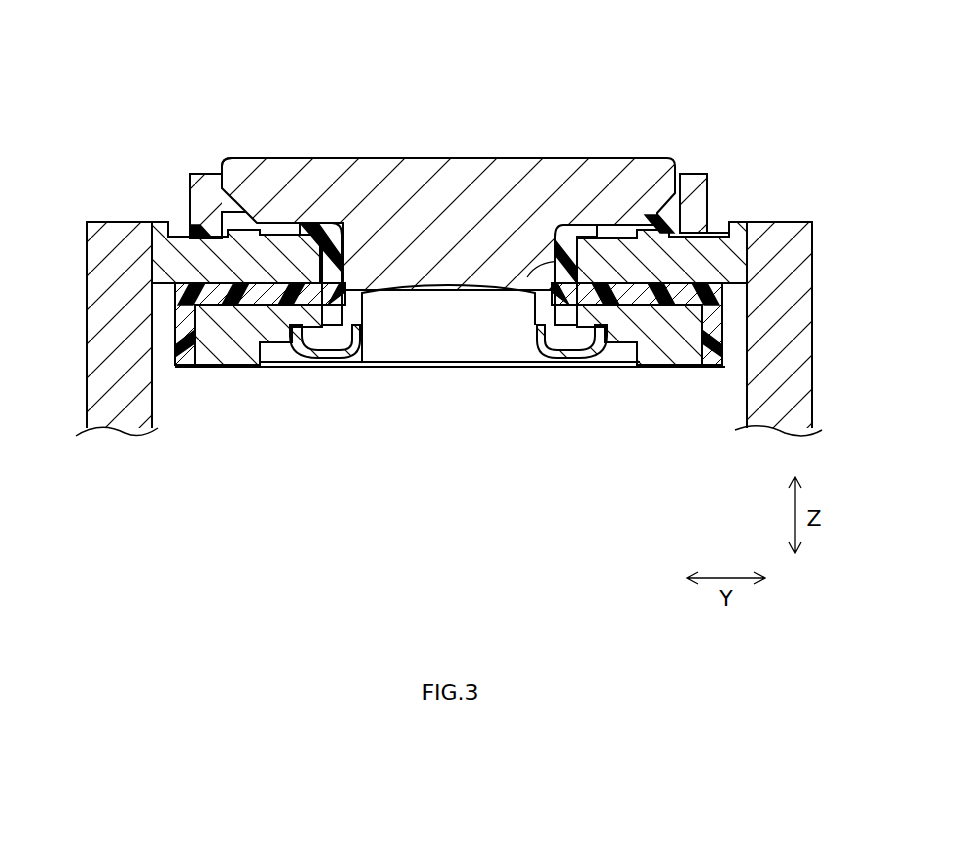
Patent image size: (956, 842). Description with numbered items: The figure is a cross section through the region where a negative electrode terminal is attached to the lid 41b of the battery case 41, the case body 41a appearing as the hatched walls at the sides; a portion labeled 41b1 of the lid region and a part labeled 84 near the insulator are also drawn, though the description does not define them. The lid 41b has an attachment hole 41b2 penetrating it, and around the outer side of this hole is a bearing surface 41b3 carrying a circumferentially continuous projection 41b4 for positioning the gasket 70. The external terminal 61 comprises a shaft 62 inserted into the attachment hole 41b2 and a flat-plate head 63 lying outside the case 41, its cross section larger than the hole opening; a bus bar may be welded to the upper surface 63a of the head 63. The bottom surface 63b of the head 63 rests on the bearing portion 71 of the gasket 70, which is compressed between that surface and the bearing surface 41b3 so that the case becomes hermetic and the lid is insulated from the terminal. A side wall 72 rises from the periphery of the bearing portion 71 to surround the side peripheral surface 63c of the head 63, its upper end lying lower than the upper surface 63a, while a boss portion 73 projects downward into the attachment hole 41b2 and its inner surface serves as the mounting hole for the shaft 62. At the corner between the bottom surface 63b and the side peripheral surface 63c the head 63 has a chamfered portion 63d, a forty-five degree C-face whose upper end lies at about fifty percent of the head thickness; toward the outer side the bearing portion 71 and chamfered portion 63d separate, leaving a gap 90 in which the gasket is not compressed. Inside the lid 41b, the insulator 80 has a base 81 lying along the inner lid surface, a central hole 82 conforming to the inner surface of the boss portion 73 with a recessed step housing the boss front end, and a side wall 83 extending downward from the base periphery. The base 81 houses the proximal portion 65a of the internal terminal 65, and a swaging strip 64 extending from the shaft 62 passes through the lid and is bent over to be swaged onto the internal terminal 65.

The battery case 41 is at (106, 110).
The case body 41a is at (97, 195).
The lid 41b is at (165, 193).
The outer wall portion 41b1 is at (749, 250).
The attachment hole 41b2 is at (413, 293).
The bearing surface 41b3 is at (608, 232).
The projection 41b4 is at (650, 217).
The external terminal 61 is at (585, 82).
The shaft 62 is at (547, 282).
The head 63 is at (600, 147).
The upper surface 63a is at (446, 157).
The bottom surface 63b is at (283, 228).
The side peripheral surface 63c is at (222, 172).
The chamfered portion 63d is at (217, 212).
The swaging strip 64 is at (328, 365).
The internal terminal 65 is at (249, 392).
The proximal portion 65a is at (228, 378).
The gasket 70 is at (742, 150).
The bearing portion 71 is at (307, 220).
The side wall 72 is at (702, 195).
The boss portion 73 is at (543, 260).
The insulator 80 is at (731, 402).
The base 81 is at (653, 313).
The hole 82 is at (567, 300).
The side wall 83 is at (703, 347).
The base plate 84 is at (363, 362).
The gap 90 is at (700, 203).